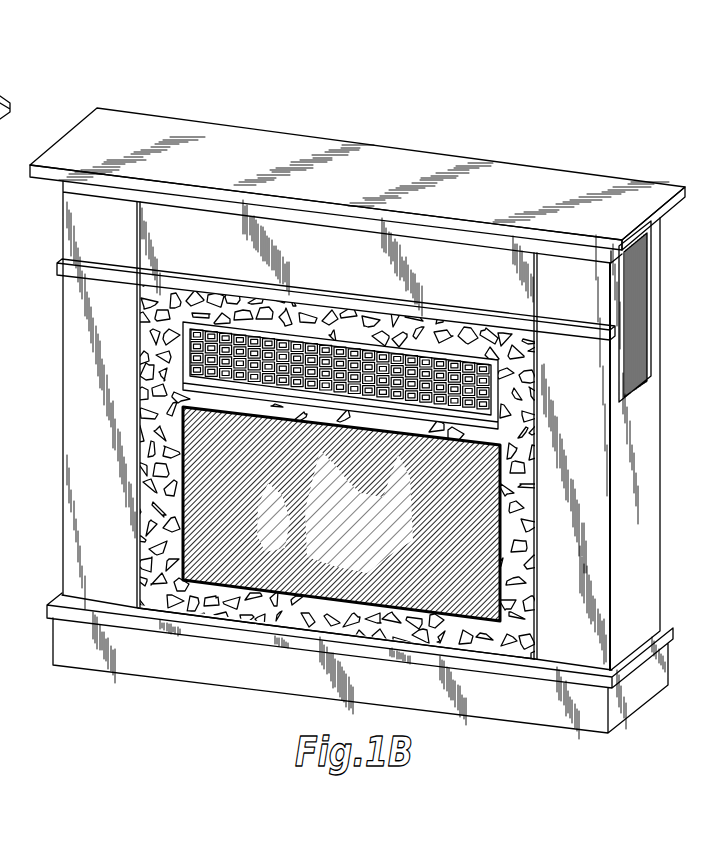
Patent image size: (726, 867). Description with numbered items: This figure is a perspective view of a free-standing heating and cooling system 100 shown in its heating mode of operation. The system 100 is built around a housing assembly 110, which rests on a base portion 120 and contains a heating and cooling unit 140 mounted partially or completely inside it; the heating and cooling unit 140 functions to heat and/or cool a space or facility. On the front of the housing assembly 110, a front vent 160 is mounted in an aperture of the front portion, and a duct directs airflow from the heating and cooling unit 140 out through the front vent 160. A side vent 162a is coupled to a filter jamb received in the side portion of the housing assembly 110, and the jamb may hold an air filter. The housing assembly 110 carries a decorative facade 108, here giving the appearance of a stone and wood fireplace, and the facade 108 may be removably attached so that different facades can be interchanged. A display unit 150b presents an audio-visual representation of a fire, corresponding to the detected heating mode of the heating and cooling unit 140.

The free-standing heating and cooling system 100 is at (359, 418).
The housing assembly 110 is at (541, 182).
The base portion 120 is at (636, 690).
The heating and cooling unit 140 is at (178, 353).
The front vent 160 is at (203, 363).
The side vent 162a is at (628, 293).
The lower front panel 150b is at (250, 590).
The decorative facade 108 is at (494, 637).